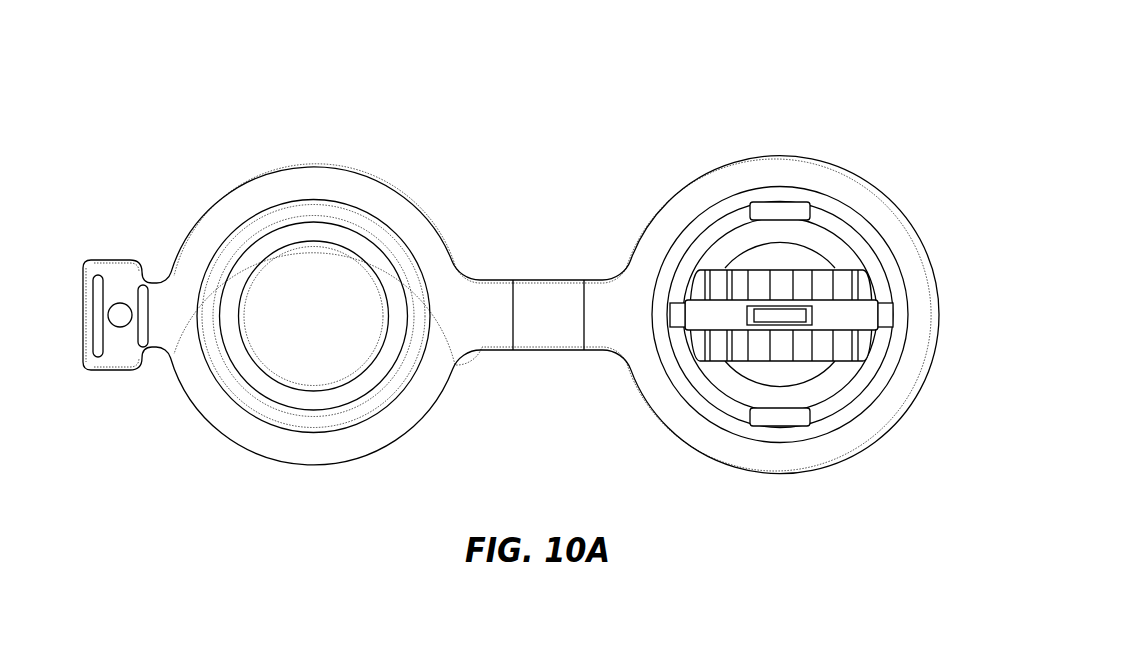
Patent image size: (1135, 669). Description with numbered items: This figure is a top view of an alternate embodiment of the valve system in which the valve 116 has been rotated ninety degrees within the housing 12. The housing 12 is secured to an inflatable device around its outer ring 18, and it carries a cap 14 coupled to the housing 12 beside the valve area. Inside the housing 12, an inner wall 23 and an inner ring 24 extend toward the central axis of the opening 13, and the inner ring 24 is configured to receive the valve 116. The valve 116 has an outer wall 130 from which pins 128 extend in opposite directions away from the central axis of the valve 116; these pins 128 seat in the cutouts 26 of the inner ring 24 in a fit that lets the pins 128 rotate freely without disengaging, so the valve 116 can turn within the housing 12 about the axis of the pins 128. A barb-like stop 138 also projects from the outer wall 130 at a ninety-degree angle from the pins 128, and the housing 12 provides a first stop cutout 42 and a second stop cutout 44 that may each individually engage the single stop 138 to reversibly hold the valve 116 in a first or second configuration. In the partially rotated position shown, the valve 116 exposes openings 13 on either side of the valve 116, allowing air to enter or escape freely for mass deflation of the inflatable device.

The housing 12 is at (806, 78).
The opening 13 is at (773, 258).
The cap 14 is at (268, 139).
The outer ring 18 is at (693, 433).
The inner wall 23 is at (867, 308).
The inner ring 24 is at (860, 382).
The cutouts 26 is at (893, 325).
The first stop cutout 42 is at (798, 212).
The second stop cutout 44 is at (785, 420).
The valve 116 is at (886, 310).
The pins 128 is at (893, 318).
The outer wall 130 is at (873, 348).
The stop 138 is at (797, 313).